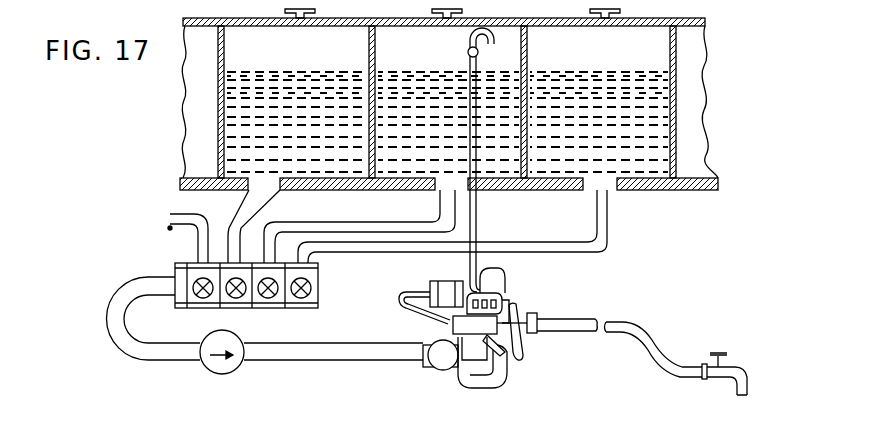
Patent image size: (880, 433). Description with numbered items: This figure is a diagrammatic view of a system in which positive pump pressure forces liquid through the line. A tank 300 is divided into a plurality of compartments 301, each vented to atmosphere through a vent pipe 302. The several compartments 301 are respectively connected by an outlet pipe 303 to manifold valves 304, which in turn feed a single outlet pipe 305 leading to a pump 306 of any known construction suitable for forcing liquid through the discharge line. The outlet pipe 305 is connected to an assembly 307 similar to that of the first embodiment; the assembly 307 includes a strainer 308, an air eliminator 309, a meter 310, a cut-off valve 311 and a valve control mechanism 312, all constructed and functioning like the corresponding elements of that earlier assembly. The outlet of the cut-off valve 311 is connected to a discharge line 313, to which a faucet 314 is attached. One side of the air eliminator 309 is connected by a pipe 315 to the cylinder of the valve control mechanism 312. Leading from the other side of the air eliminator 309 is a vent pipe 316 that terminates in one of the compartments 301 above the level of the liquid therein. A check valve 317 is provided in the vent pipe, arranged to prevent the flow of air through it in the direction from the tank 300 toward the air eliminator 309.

The tank 300 is at (180, 190).
The compartments 301 is at (287, 60).
The vent pipe 302 is at (307, 17).
The outlet pipe 303 is at (197, 236).
The manifold valves 304 is at (236, 319).
The outlet pipe 305 is at (178, 355).
The pump 306 is at (233, 368).
The assembly 307 is at (485, 338).
The strainer 308 is at (437, 364).
The air eliminator 309 is at (440, 282).
The meter 310 is at (494, 380).
The cut-off valve 311 is at (510, 308).
The valve control mechanism 312 is at (430, 325).
The discharge line 313 is at (574, 322).
The faucet 314 is at (738, 370).
The vent pipe 316 is at (477, 234).
The check valve 317 is at (479, 53).
The pipe 315 is at (401, 298).